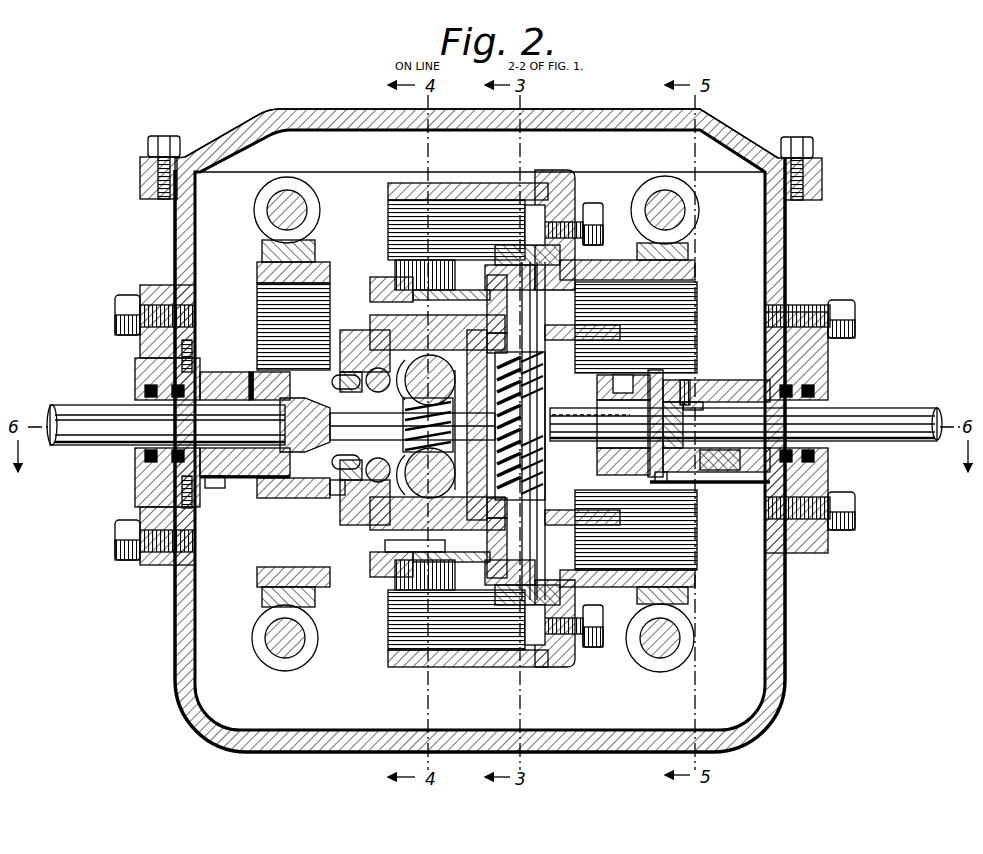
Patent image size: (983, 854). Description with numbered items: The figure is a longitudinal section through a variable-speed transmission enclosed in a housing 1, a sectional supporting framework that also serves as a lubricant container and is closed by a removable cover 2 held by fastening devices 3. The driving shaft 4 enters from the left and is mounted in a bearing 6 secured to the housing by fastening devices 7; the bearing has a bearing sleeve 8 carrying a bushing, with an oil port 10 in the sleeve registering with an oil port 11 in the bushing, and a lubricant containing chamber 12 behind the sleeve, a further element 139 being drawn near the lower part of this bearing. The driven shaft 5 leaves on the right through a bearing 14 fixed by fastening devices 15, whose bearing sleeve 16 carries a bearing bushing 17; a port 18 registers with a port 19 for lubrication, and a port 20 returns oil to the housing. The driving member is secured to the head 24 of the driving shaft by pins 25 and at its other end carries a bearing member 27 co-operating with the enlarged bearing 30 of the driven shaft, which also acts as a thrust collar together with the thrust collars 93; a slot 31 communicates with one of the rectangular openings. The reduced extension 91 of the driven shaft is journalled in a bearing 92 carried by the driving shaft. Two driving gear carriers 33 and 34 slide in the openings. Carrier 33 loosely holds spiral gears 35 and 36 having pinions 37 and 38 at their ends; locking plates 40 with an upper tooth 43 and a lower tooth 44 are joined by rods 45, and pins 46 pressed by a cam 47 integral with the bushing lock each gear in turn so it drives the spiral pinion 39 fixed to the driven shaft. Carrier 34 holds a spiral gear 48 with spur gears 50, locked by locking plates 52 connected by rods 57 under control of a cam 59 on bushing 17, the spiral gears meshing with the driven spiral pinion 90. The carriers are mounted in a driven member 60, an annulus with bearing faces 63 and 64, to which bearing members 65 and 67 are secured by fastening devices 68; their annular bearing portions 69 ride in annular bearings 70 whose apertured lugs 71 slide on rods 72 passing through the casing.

The housing 1 is at (790, 258).
The removable cover 2 is at (630, 113).
The fastening devices 3 is at (165, 136).
The driving shaft 4 is at (72, 406).
The driven shaft 5 is at (880, 408).
The bearing 6 is at (135, 482).
The fastening devices 7 is at (118, 302).
The bearing sleeve 8 is at (222, 372).
The oil port 10 is at (250, 372).
The oil port 11 is at (262, 398).
The lubricant containing chamber 12 is at (200, 395).
The bearing 14 is at (830, 470).
The fastening devices 15 is at (850, 320).
The bearing sleeve 16 is at (742, 380).
The bearing bushing 17 is at (700, 473).
The port 18 is at (688, 392).
The port 19 is at (690, 408).
The port 20 is at (735, 472).
The head 24 is at (375, 577).
The pins 25 is at (372, 280).
The bearing member 27 is at (625, 478).
The enlarged bearing 30 is at (623, 425).
The slot 31 is at (357, 320).
The driving gear carrier 33 is at (400, 560).
The driving gear carrier 34 is at (545, 505).
The spiral gear 35 is at (455, 390).
The spiral gear 36 is at (403, 479).
The pinion 37 is at (450, 366).
The pinion 38 is at (450, 485).
The spiral pinion 39 is at (404, 418).
The locking plates 40 is at (380, 463).
The tooth 43 is at (403, 373).
The tooth 44 is at (340, 520).
The rods 45 is at (342, 336).
The pins 46 is at (346, 420).
The cam 47 is at (275, 500).
The spiral gear 48 is at (528, 418).
The spur gear 50 is at (496, 426).
The locking plates 52 is at (595, 333).
The rods 57 is at (610, 478).
The cam 59 is at (660, 482).
The driven member 60 is at (485, 188).
The bearing face 63 is at (592, 218).
The bearing face 64 is at (500, 620).
The bearing member 65 is at (262, 300).
The bearing member 67 is at (697, 318).
The fastening devices 68 is at (575, 215).
The annular bearing portion 69 is at (697, 580).
The annular bearing 70 is at (692, 252).
The apertured lug 71 is at (292, 185).
The rod 72 is at (278, 205).
The driven spiral pinion 90 is at (580, 412).
The reduced extension 91 is at (316, 425).
The bearing 92 is at (240, 480).
The thrust collars 93 is at (383, 386).
The packing 139 is at (210, 480).